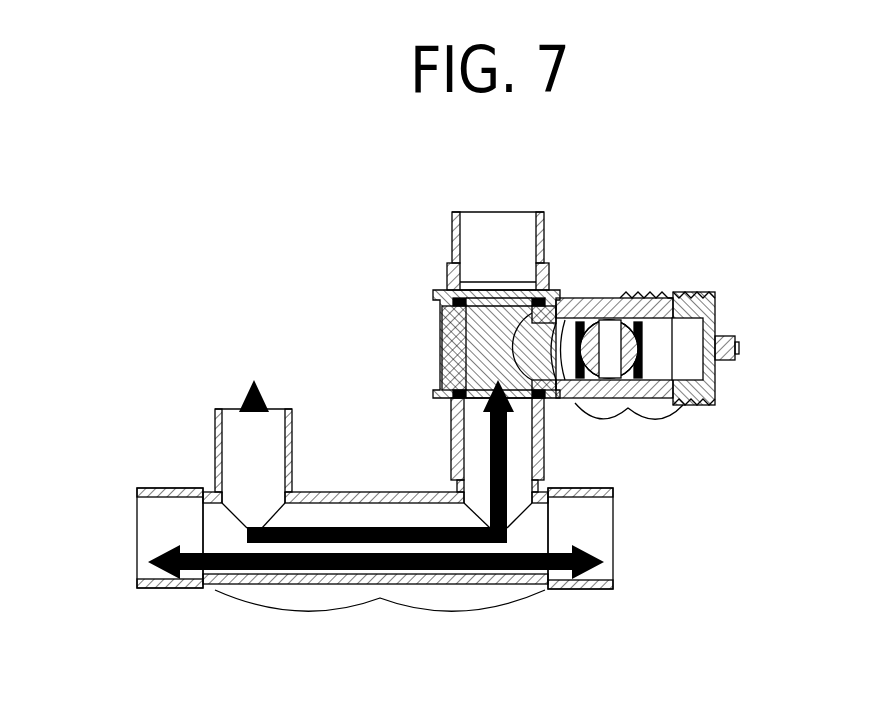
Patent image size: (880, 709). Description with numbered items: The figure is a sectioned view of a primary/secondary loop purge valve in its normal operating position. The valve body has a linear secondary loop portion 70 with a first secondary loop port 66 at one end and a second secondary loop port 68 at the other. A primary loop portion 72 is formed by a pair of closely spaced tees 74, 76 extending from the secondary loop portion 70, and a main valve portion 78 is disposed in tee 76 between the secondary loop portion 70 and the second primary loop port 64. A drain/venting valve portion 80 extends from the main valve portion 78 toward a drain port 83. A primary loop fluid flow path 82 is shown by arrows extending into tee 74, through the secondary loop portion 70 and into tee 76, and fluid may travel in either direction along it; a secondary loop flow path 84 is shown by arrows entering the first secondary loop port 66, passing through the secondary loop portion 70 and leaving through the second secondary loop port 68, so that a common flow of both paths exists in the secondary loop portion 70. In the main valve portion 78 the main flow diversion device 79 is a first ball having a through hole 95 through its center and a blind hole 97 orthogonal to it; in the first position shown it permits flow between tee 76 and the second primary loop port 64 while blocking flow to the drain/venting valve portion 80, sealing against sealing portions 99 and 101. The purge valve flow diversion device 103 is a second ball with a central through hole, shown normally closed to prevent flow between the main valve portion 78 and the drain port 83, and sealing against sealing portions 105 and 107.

The second primary loop port 64 is at (472, 213).
The first secondary loop port 66 is at (118, 512).
The second secondary loop port 68 is at (621, 532).
The secondary loop portion 70 is at (373, 492).
The primary loop portion 72 is at (380, 645).
The tee 74 is at (207, 461).
The tee 76 is at (458, 463).
The main valve portion 78 is at (459, 343).
The main flow diversion device 79 is at (443, 283).
The drain/venting valve portion 80 is at (654, 440).
The primary loop fluid flow path 82 is at (332, 410).
The drain port 83 is at (731, 313).
The secondary loop flow path 84 is at (322, 578).
The through hole 95 is at (596, 261).
The blind hole 97 is at (611, 254).
The sealing portion 99 is at (446, 359).
The sealing portion 101 is at (448, 311).
The purge valve flow diversion device 103 is at (624, 304).
The sealing portion 105 is at (618, 275).
The sealing portion 107 is at (699, 297).